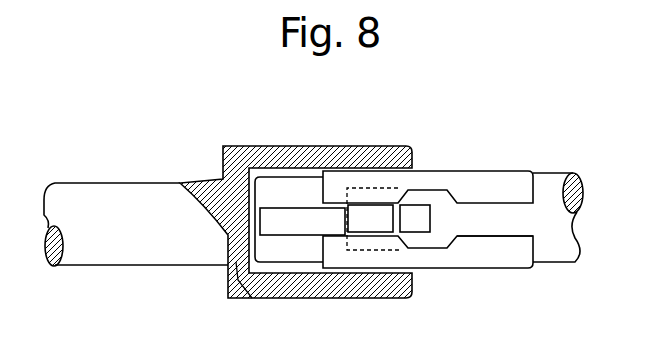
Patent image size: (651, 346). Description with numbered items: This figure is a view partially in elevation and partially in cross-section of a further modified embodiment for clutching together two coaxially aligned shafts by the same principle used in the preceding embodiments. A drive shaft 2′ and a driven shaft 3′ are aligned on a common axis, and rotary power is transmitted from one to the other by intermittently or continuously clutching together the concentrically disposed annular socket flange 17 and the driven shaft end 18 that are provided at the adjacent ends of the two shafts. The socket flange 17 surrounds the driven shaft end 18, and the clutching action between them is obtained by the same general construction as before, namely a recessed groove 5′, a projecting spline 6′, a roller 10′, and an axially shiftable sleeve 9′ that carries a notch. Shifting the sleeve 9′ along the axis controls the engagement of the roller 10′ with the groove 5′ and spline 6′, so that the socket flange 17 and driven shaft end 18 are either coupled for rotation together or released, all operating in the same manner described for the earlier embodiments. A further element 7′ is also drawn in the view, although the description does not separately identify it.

The drive shaft 2′ is at (165, 245).
The driven shaft 3′ is at (560, 250).
The recessed groove 5′ is at (383, 193).
The projecting spline 6′ is at (412, 223).
The lower body part 7′ is at (470, 235).
The axially shiftable sleeve 9′ is at (495, 250).
The roller 10′ is at (367, 210).
The annular socket flange 17 is at (278, 285).
The driven shaft end 18 is at (290, 193).